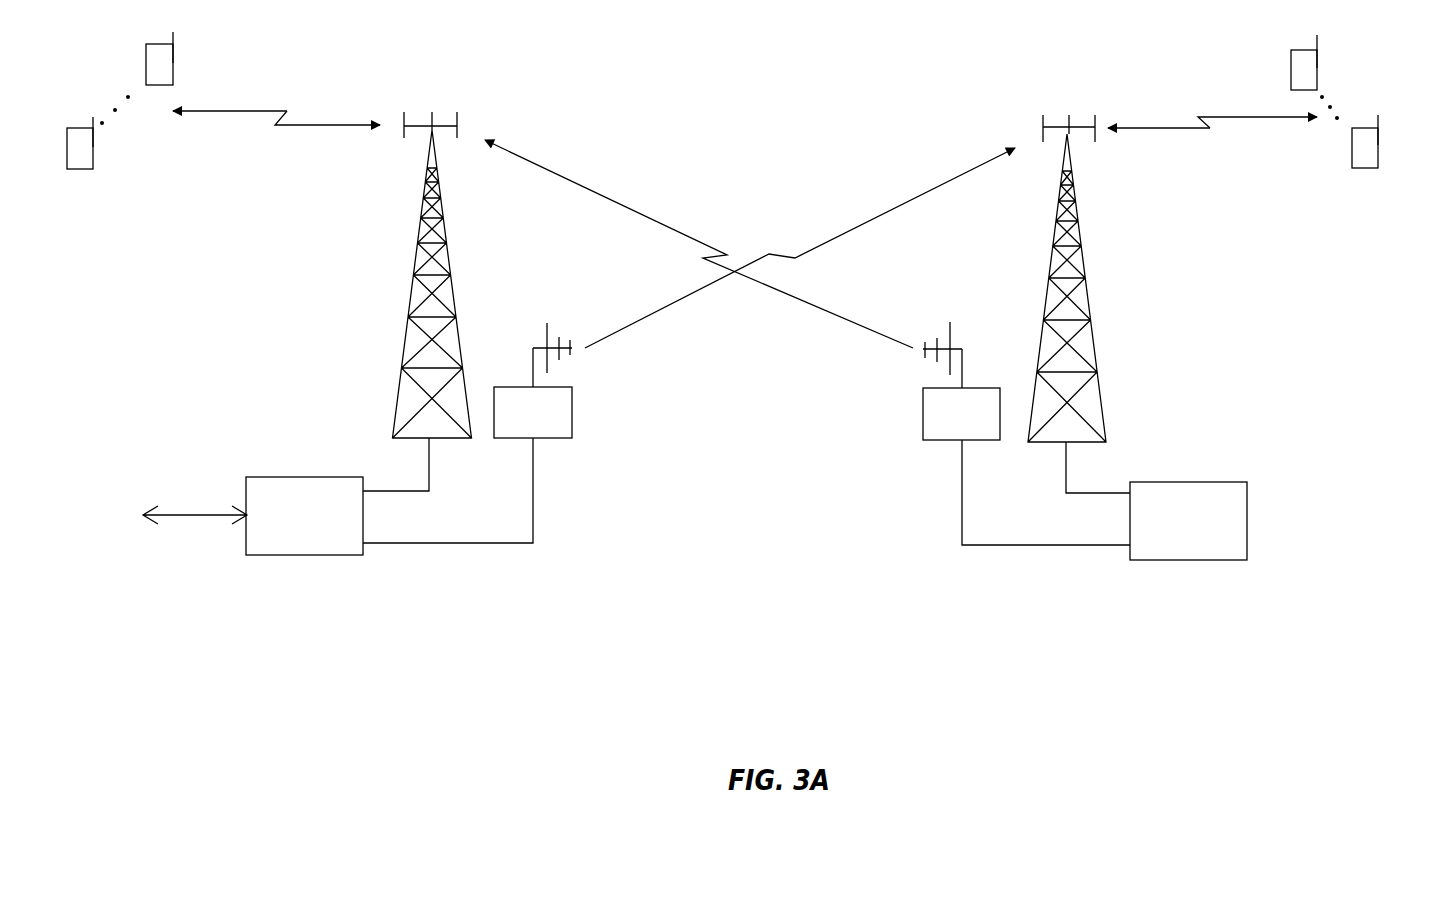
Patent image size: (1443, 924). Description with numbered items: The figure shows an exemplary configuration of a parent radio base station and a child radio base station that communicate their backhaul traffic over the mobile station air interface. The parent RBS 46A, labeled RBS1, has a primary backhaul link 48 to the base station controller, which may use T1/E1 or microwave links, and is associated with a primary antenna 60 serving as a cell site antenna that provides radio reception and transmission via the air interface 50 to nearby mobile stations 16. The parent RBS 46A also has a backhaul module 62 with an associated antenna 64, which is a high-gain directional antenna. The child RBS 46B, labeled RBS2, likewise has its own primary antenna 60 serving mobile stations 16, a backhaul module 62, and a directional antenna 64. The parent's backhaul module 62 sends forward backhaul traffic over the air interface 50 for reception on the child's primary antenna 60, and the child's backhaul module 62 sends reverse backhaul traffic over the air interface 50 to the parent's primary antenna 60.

The mobile station 16 is at (173, 63).
The parent RBS 46A is at (305, 555).
The child RBS 46B is at (1185, 560).
The backhaul link 48 is at (167, 517).
The air interface 50 is at (298, 125).
The primary antenna 60 is at (442, 440).
The backhaul module 62 is at (558, 438).
The backhaul module antenna 64 is at (538, 347).